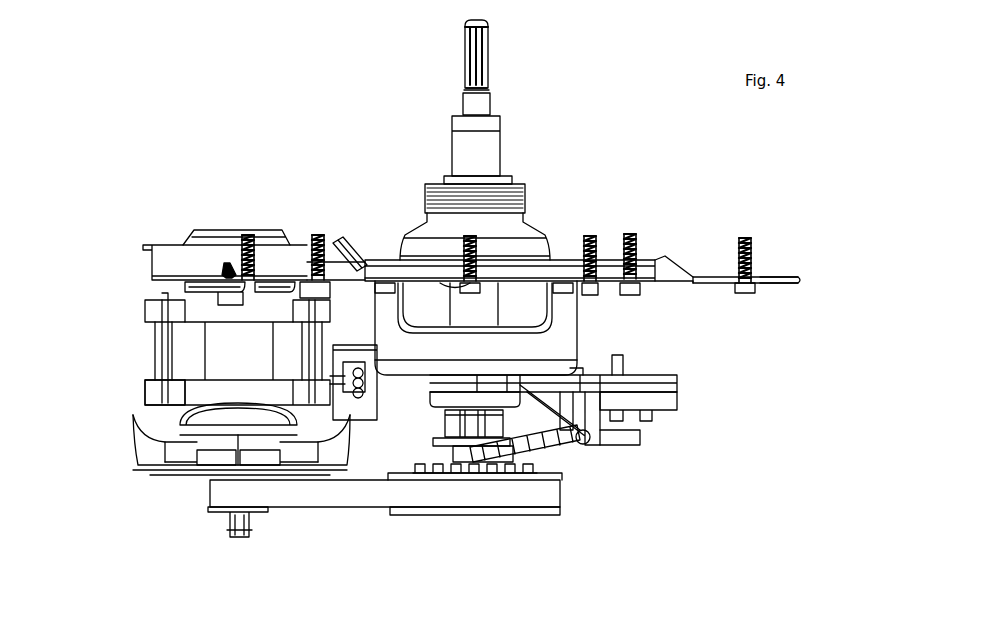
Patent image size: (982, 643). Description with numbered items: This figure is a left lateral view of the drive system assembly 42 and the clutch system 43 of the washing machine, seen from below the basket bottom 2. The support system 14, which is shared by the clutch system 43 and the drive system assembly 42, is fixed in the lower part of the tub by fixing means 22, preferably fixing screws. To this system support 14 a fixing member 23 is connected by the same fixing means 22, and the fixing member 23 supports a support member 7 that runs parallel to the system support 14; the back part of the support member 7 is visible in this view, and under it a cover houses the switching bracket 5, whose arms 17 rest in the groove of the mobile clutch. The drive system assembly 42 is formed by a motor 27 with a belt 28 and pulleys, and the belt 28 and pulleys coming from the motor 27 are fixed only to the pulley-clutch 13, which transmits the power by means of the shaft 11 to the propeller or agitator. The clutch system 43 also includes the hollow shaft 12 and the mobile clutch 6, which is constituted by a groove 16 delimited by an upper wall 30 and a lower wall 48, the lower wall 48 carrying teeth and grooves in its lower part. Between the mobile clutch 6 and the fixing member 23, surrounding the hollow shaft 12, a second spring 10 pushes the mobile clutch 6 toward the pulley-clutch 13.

The shaft 11 is at (460, 46).
The hollow shaft 12 is at (480, 140).
The fixing means 22 is at (632, 226).
The bottom 2 is at (683, 279).
The support system 14 is at (789, 288).
The fixing member 23 is at (550, 337).
The support member 7 is at (679, 388).
The drive system assembly 42 is at (126, 381).
The motor 27 is at (190, 380).
The belt 28 is at (340, 488).
The second spring 10 is at (431, 427).
The groove 16 is at (442, 459).
The lower wall 48 is at (457, 445).
The upper wall 30 is at (458, 472).
The mobile clutch 6 is at (512, 472).
The pulley-clutch 13 is at (517, 513).
The switching bracket 5 is at (575, 449).
The arms 17 is at (547, 449).
The clutch system 43 is at (706, 433).